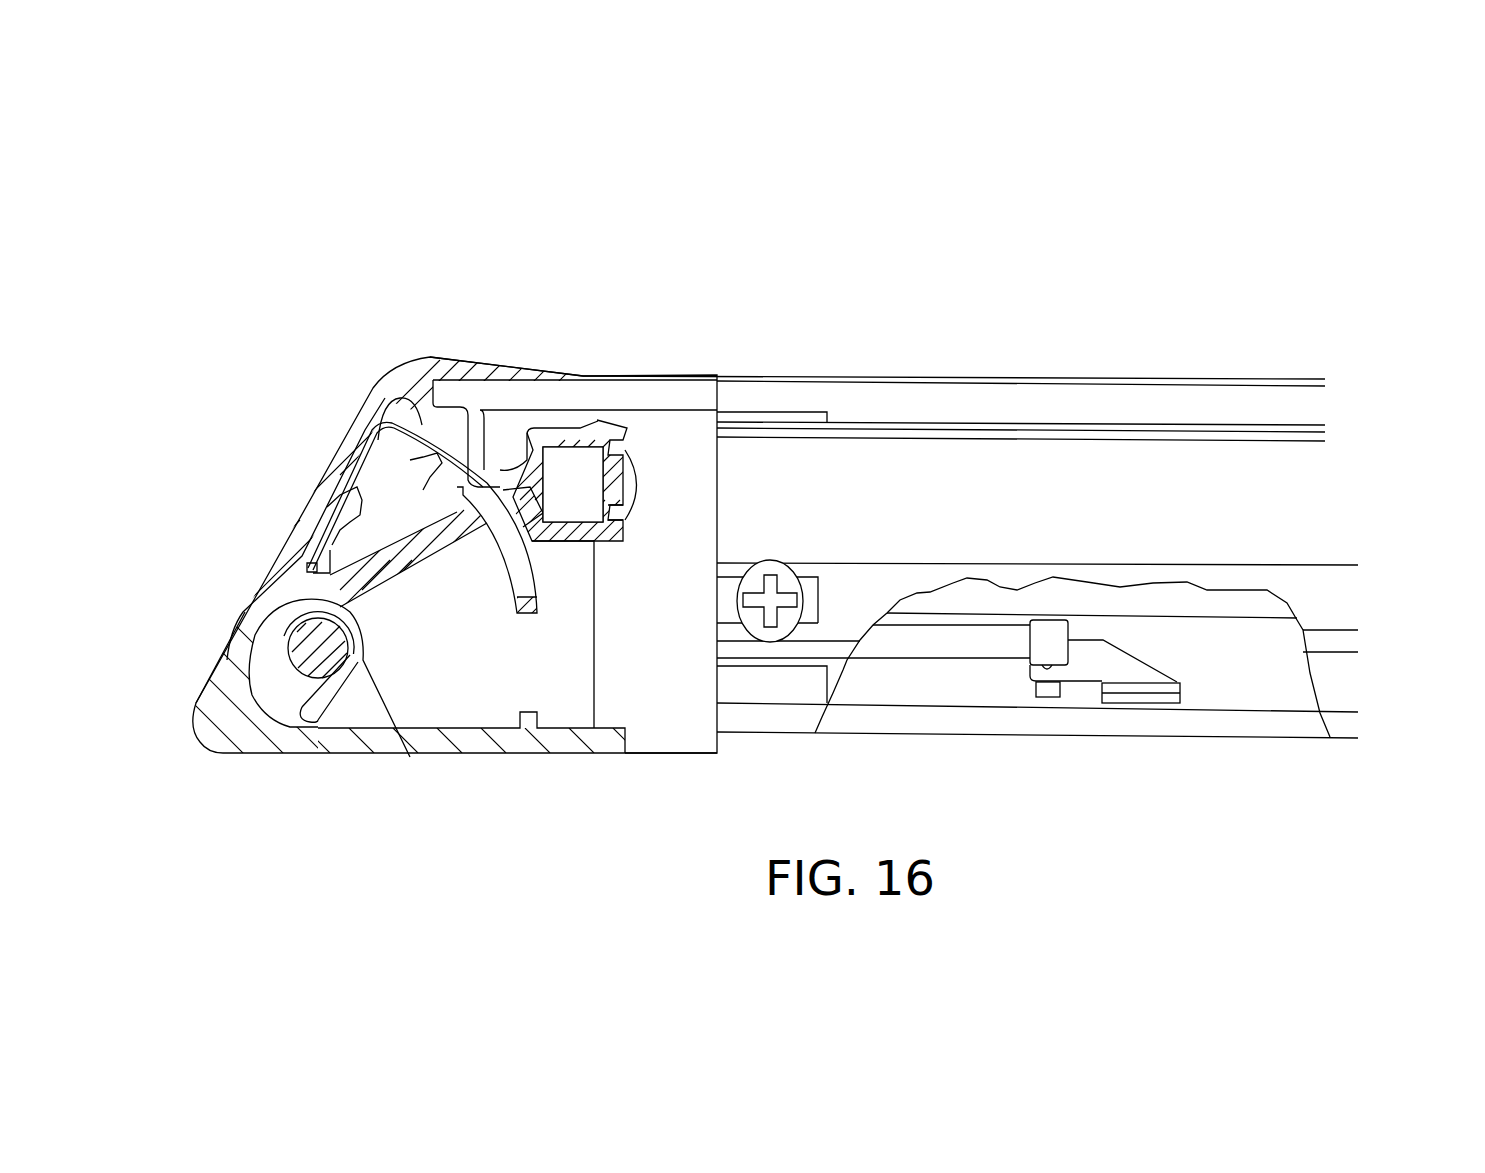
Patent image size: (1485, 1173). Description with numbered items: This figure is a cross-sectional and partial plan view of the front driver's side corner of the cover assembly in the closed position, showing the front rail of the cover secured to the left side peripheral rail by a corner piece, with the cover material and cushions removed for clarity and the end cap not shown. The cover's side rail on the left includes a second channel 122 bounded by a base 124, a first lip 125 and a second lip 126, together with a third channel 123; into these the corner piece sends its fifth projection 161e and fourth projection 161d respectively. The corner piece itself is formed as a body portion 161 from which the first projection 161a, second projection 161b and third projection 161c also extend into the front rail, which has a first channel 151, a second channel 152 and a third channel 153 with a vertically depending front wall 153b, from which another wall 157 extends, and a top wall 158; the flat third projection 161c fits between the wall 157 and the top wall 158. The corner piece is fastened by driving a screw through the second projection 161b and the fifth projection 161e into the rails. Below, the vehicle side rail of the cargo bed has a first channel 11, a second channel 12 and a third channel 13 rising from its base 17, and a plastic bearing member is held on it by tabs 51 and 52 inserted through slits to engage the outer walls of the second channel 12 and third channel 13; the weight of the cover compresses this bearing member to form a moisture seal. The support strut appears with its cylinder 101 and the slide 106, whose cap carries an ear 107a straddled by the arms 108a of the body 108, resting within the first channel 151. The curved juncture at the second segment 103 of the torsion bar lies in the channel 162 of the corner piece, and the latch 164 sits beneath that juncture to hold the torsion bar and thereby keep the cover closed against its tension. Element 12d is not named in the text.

The first channel 11 is at (255, 653).
The second channel 12 is at (290, 543).
The top wall of housing 12d is at (503, 370).
The third channel 13 is at (417, 520).
The base 17 is at (553, 740).
The tab 51 is at (333, 497).
The tab 52 is at (377, 427).
The cylinder 101 is at (940, 647).
The second segment 103 is at (303, 640).
The slide 106 is at (1158, 640).
The ear 107a is at (1035, 690).
The body 108 is at (1130, 697).
The arms 108a is at (1052, 680).
The second channel 122 is at (565, 542).
The third channel 123 is at (457, 380).
The base 124 is at (575, 528).
The first lip 125 is at (623, 520).
The second lip 126 is at (623, 450).
The first channel 151 is at (1267, 683).
The second channel 152 is at (835, 683).
The third channel 153 is at (1320, 595).
The front wall 153b is at (1307, 500).
The wall 157 is at (1315, 440).
The top wall 158 is at (1245, 378).
The body portion 161 is at (487, 673).
The first projection 161a is at (812, 412).
The second projection 161b is at (822, 595).
The third projection 161c is at (768, 690).
The fourth projection 161d is at (517, 423).
The fifth projection 161e is at (580, 470).
The channel 162 is at (355, 720).
The latch 164 is at (312, 745).